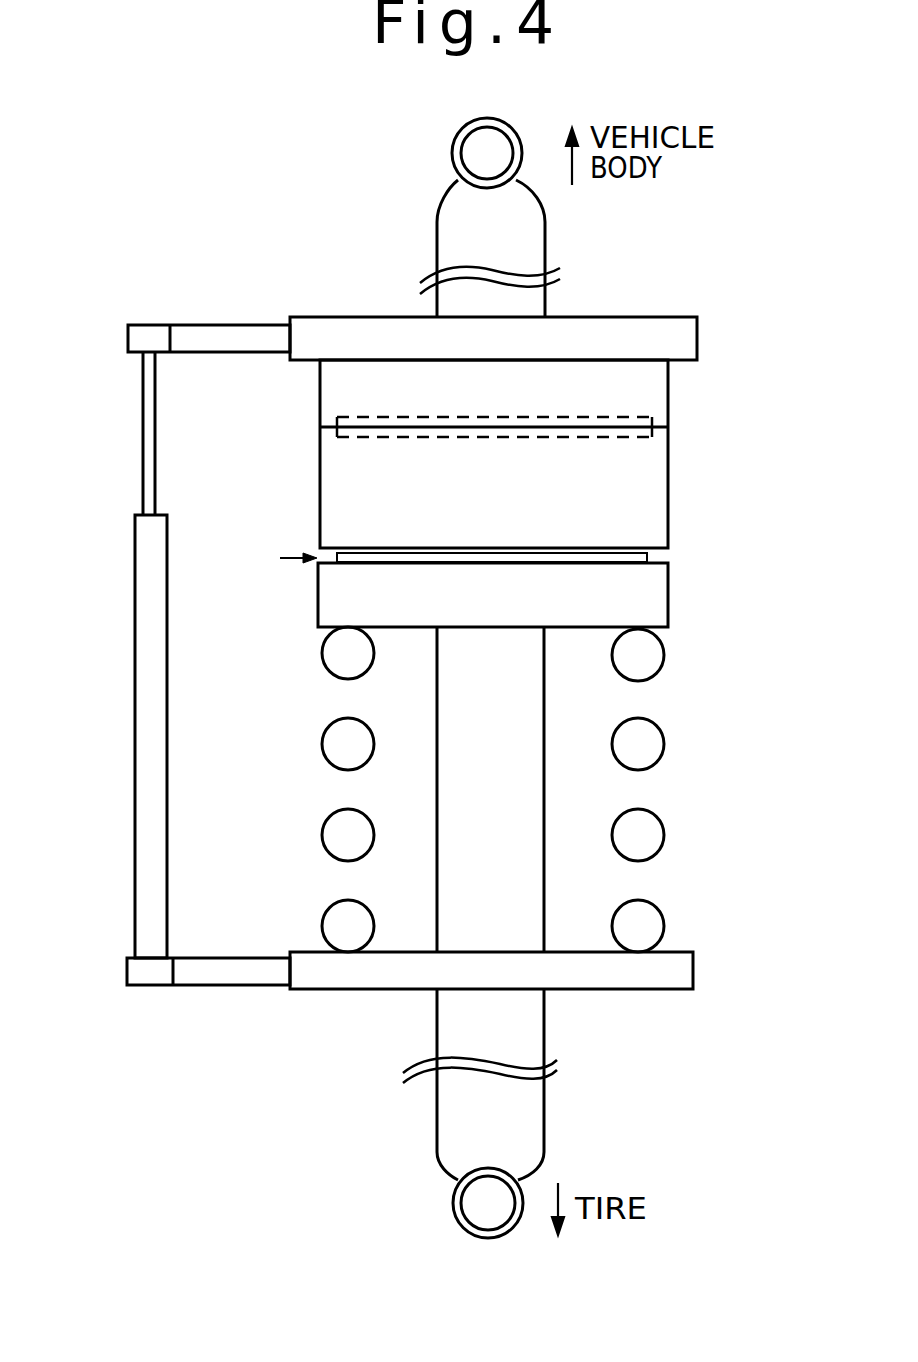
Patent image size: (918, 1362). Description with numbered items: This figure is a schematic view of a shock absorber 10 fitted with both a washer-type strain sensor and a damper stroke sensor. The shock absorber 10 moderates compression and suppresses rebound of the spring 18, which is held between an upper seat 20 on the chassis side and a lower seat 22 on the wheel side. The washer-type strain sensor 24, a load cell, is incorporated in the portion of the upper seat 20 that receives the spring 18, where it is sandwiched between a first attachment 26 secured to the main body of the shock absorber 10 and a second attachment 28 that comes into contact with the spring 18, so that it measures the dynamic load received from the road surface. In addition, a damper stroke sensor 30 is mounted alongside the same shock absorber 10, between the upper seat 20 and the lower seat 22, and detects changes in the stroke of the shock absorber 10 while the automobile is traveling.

The shock absorber 10 is at (583, 268).
The spring 18 is at (642, 660).
The upper seat 20 is at (683, 333).
The lower seat 22 is at (677, 970).
The washer-type strain sensor 24 is at (642, 480).
The first attachment 26 is at (653, 388).
The second attachment 28 is at (643, 588).
The damper stroke sensor 30 is at (147, 832).